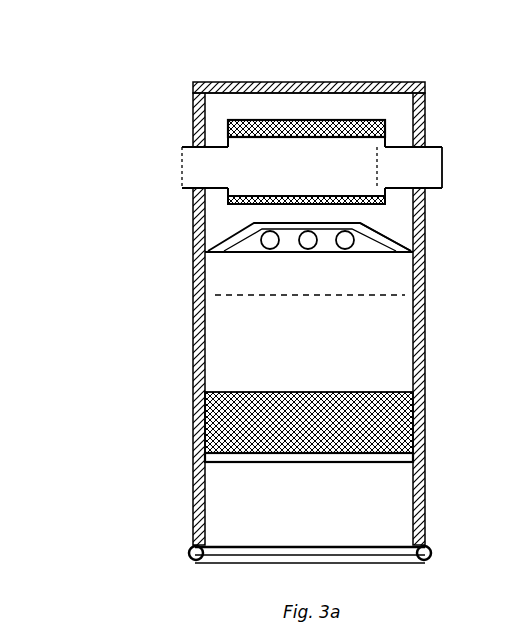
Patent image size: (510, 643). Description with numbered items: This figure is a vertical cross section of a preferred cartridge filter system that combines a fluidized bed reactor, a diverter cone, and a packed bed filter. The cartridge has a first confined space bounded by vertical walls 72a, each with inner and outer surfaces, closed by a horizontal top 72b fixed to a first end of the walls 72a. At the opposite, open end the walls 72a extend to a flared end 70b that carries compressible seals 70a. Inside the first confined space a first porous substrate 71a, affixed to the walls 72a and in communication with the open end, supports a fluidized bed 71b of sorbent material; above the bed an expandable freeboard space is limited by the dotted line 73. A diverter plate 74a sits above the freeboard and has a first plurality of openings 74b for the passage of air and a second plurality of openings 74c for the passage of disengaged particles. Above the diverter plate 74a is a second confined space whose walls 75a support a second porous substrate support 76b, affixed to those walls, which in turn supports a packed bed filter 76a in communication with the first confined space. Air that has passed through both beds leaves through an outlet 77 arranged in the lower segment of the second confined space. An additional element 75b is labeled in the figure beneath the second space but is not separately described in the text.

The compressible seals 70a is at (190, 561).
The flared end 70b is at (182, 540).
The first porous substrate 71a is at (267, 468).
The fluidized bed 71b is at (236, 426).
The vertical walls 72a is at (191, 336).
The horizontal top 72b is at (313, 76).
The dotted line 73 is at (222, 291).
The diverter plate 74a is at (229, 233).
The first plurality of openings 74b is at (308, 251).
The second plurality of openings 74c is at (406, 245).
The walls of second confined space 75a is at (223, 128).
The lower plate 75b is at (251, 188).
The packed bed filter 76a is at (256, 105).
The second porous substrate support 76b is at (358, 132).
The outlet 77 is at (428, 170).